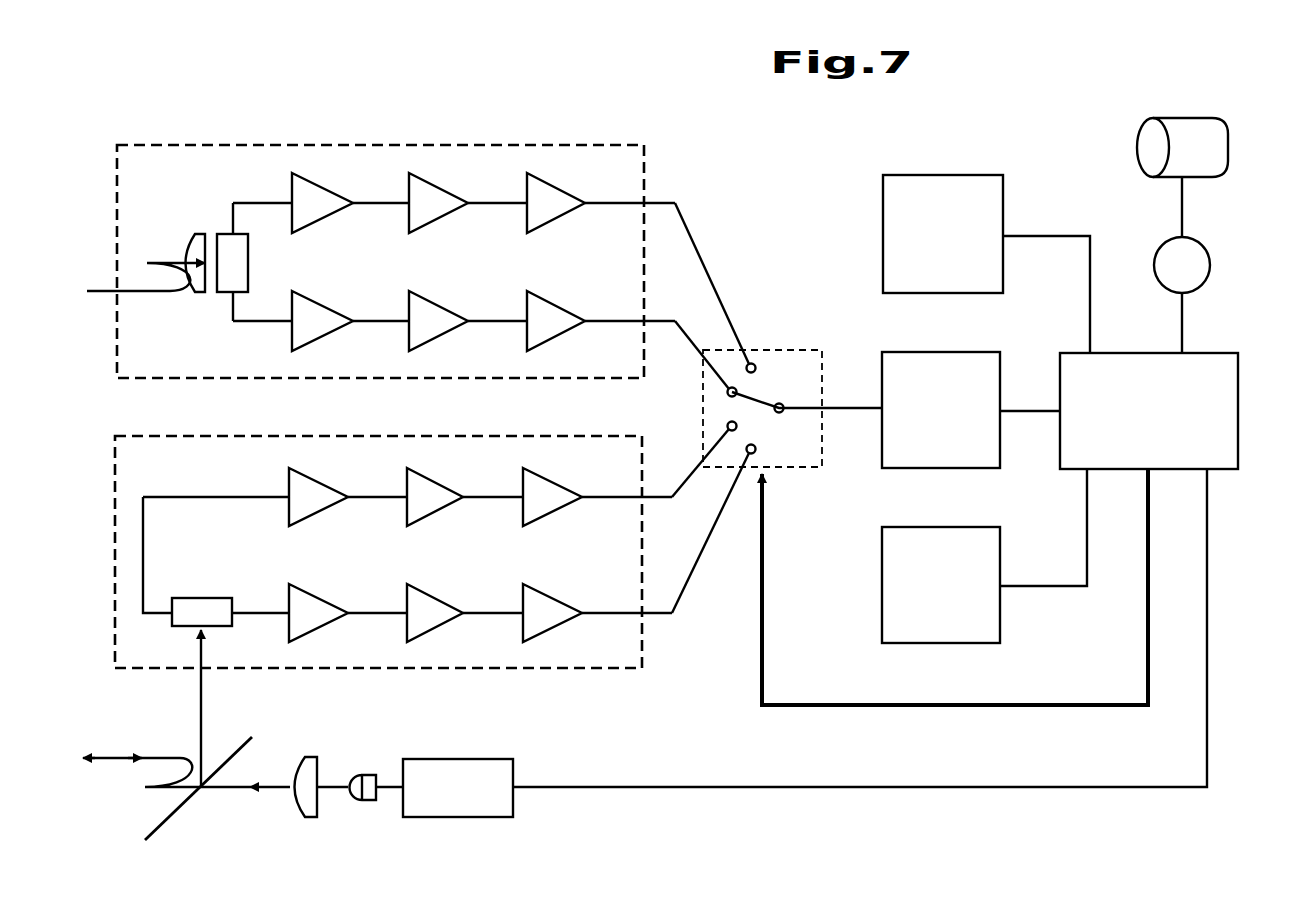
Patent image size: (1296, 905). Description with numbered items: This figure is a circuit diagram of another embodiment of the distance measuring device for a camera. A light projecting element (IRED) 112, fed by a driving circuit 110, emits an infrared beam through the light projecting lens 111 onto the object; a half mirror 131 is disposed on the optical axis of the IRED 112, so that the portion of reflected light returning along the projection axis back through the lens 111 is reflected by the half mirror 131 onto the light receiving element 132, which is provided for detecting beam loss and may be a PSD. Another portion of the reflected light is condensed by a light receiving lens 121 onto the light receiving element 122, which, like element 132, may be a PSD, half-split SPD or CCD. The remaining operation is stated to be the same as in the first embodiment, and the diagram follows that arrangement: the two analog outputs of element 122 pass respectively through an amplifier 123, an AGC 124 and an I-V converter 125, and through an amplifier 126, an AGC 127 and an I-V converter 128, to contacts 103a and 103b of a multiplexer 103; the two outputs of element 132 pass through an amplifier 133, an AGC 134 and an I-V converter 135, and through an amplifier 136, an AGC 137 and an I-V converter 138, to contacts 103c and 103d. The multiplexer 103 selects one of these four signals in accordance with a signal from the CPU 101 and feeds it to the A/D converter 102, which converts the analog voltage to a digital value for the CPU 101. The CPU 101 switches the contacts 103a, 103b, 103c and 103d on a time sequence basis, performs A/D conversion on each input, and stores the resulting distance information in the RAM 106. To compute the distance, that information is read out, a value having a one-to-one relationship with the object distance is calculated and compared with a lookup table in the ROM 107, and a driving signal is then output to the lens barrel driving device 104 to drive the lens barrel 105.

The CPU 101 is at (1210, 353).
The A/D converter 102 is at (975, 352).
The switch 103 is at (757, 408).
The switch contact 103a is at (753, 363).
The switch contact 103b is at (727, 393).
The switch contact 103c is at (727, 427).
The switch contact 103d is at (754, 453).
The interface 104 is at (1210, 265).
The drum 105 is at (1213, 177).
The RAM 106 is at (968, 527).
The ROM 107 is at (1003, 207).
The driving circuit 110 is at (463, 759).
The light projecting lens 111 is at (305, 757).
The light projecting element (IRED) 112 is at (360, 775).
The lens 121 is at (203, 233).
The light receiving element 122 is at (248, 263).
The amplifier 123 is at (322, 184).
The amplifier 124 is at (440, 184).
The amplifier 125 is at (557, 184).
The amplifier 126 is at (322, 302).
The amplifier 127 is at (440, 302).
The amplifier 128 is at (557, 302).
The half mirror 131 is at (252, 737).
The light receiving element 132 is at (201, 598).
The amplifier 133 is at (319, 478).
The amplifier 134 is at (436, 478).
The amplifier 135 is at (553, 478).
The amplifier 136 is at (319, 596).
The amplifier 137 is at (436, 596).
The amplifier 138 is at (553, 596).